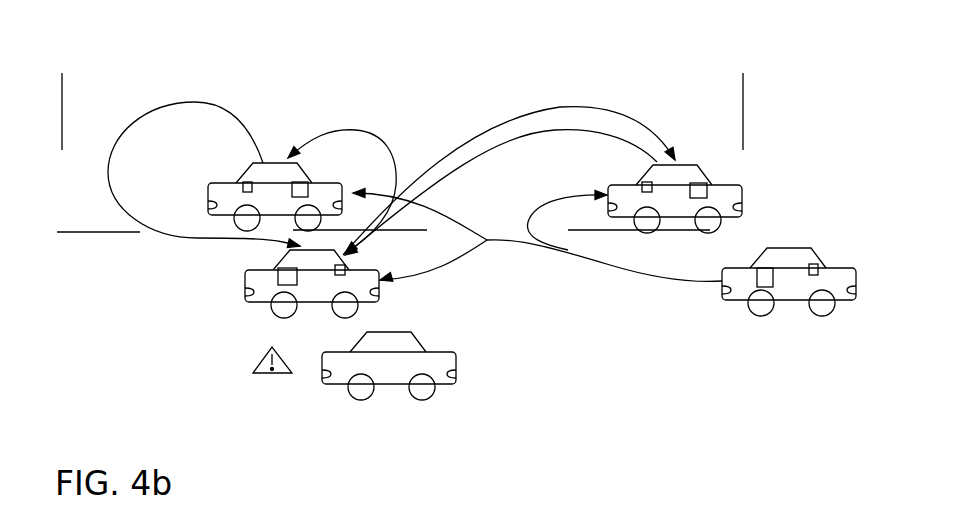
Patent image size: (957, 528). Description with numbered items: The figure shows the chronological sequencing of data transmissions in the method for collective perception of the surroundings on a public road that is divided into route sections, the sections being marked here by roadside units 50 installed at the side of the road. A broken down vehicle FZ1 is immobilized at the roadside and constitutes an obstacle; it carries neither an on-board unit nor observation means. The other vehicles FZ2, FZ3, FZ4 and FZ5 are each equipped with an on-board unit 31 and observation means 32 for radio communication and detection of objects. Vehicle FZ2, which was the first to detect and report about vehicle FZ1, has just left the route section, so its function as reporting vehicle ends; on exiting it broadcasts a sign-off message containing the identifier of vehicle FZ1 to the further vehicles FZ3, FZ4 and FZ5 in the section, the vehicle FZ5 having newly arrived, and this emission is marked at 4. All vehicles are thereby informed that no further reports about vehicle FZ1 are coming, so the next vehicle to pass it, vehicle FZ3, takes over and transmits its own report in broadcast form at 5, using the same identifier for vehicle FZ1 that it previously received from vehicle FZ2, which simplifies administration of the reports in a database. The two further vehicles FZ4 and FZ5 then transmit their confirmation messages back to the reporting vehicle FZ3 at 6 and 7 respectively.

The roadside unit 50 is at (62, 91).
The on-board unit 31 is at (306, 183).
The observation means 32 is at (243, 182).
The broken down vehicle FZ1 is at (392, 383).
The vehicle FZ2 is at (792, 300).
The vehicle FZ3 is at (245, 282).
The oncoming vehicle FZ4 is at (210, 195).
The vehicle FZ5 is at (743, 193).
The sign-off message emission 4 is at (537, 235).
The report transmission 5 is at (359, 189).
The confirmation message transmission 6 is at (204, 159).
The confirmation message transmission 7 is at (509, 181).